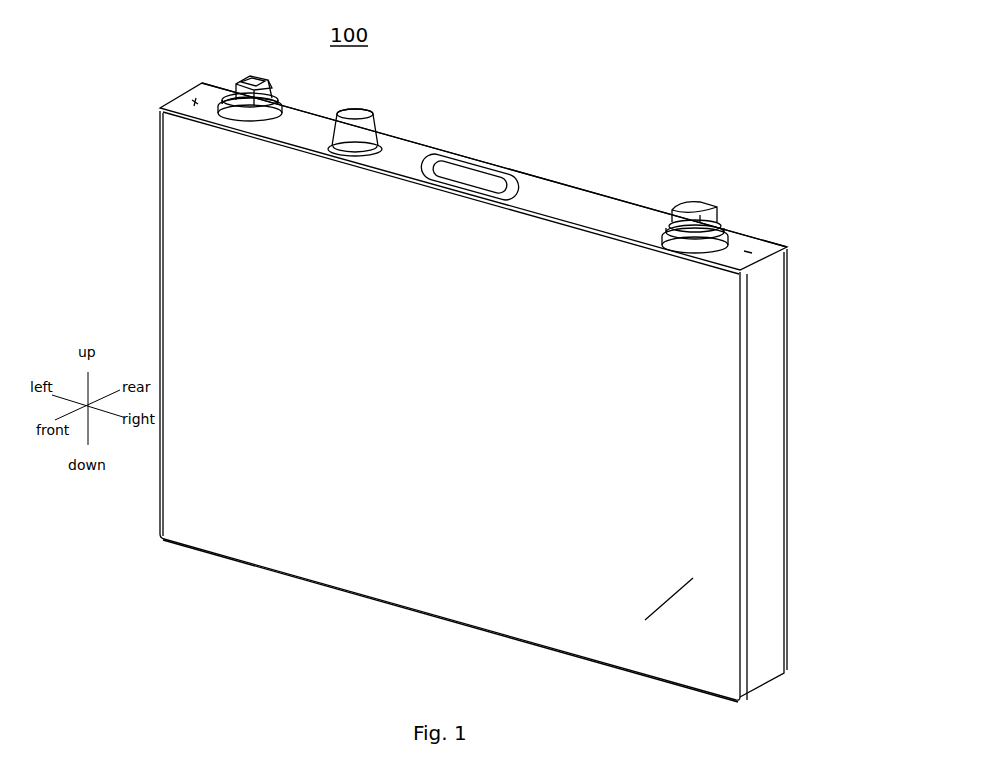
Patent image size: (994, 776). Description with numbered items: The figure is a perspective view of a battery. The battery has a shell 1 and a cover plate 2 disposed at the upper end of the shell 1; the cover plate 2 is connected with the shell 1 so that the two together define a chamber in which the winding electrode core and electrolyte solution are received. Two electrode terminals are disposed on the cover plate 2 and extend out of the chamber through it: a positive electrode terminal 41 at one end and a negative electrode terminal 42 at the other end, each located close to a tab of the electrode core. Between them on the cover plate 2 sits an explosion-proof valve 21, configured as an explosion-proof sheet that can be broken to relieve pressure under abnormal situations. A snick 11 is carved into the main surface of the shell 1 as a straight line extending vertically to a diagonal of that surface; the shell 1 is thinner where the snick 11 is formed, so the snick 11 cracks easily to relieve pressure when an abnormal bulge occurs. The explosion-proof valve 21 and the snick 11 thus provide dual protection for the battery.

The shell 1 is at (205, 234).
The cover plate 2 is at (588, 207).
The explosion-proof valve 21 is at (467, 178).
The positive electrode terminal 41 is at (242, 82).
The negative electrode terminal 42 is at (695, 213).
The snick 11 is at (657, 592).